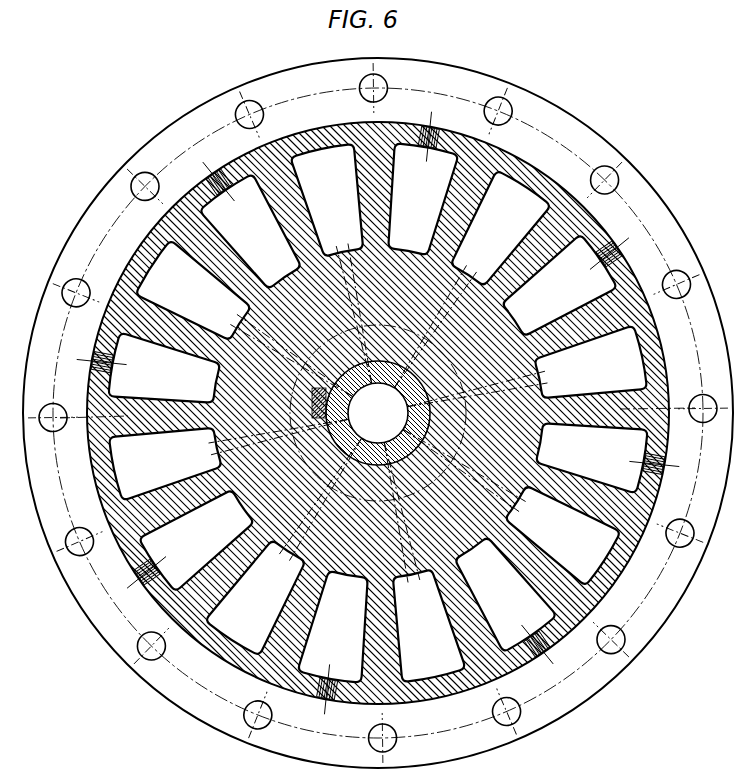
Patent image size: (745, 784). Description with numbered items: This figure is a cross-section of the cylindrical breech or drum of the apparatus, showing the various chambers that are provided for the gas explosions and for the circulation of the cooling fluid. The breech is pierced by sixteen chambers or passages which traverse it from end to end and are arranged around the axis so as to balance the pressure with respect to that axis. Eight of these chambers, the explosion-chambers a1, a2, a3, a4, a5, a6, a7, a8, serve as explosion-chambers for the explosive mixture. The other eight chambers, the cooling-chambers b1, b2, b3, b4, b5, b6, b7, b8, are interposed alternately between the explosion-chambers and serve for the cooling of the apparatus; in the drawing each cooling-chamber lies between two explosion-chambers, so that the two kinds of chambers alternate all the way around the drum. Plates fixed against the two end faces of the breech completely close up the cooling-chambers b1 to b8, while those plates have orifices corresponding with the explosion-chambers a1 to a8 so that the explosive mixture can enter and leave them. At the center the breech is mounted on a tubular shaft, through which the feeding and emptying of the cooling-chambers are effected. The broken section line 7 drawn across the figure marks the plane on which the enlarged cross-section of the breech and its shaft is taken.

The explosion-chamber a1 is at (416, 255).
The explosion-chamber a2 is at (530, 328).
The explosion-chamber a3 is at (560, 466).
The explosion-chamber a4 is at (470, 560).
The explosion-chamber a5 is at (337, 578).
The explosion-chamber a6 is at (240, 500).
The explosion-chamber a7 is at (128, 372).
The explosion-chamber a8 is at (262, 206).
The cooling-chamber b1 is at (353, 246).
The cooling-chamber b2 is at (470, 278).
The cooling-chamber b3 is at (545, 395).
The cooling-chamber b4 is at (508, 508).
The cooling-chamber b5 is at (420, 585).
The cooling-chamber b6 is at (300, 555).
The cooling-chamber b7 is at (230, 445).
The cooling-chamber b8 is at (245, 280).
The section line 7 7 is at (378, 413).